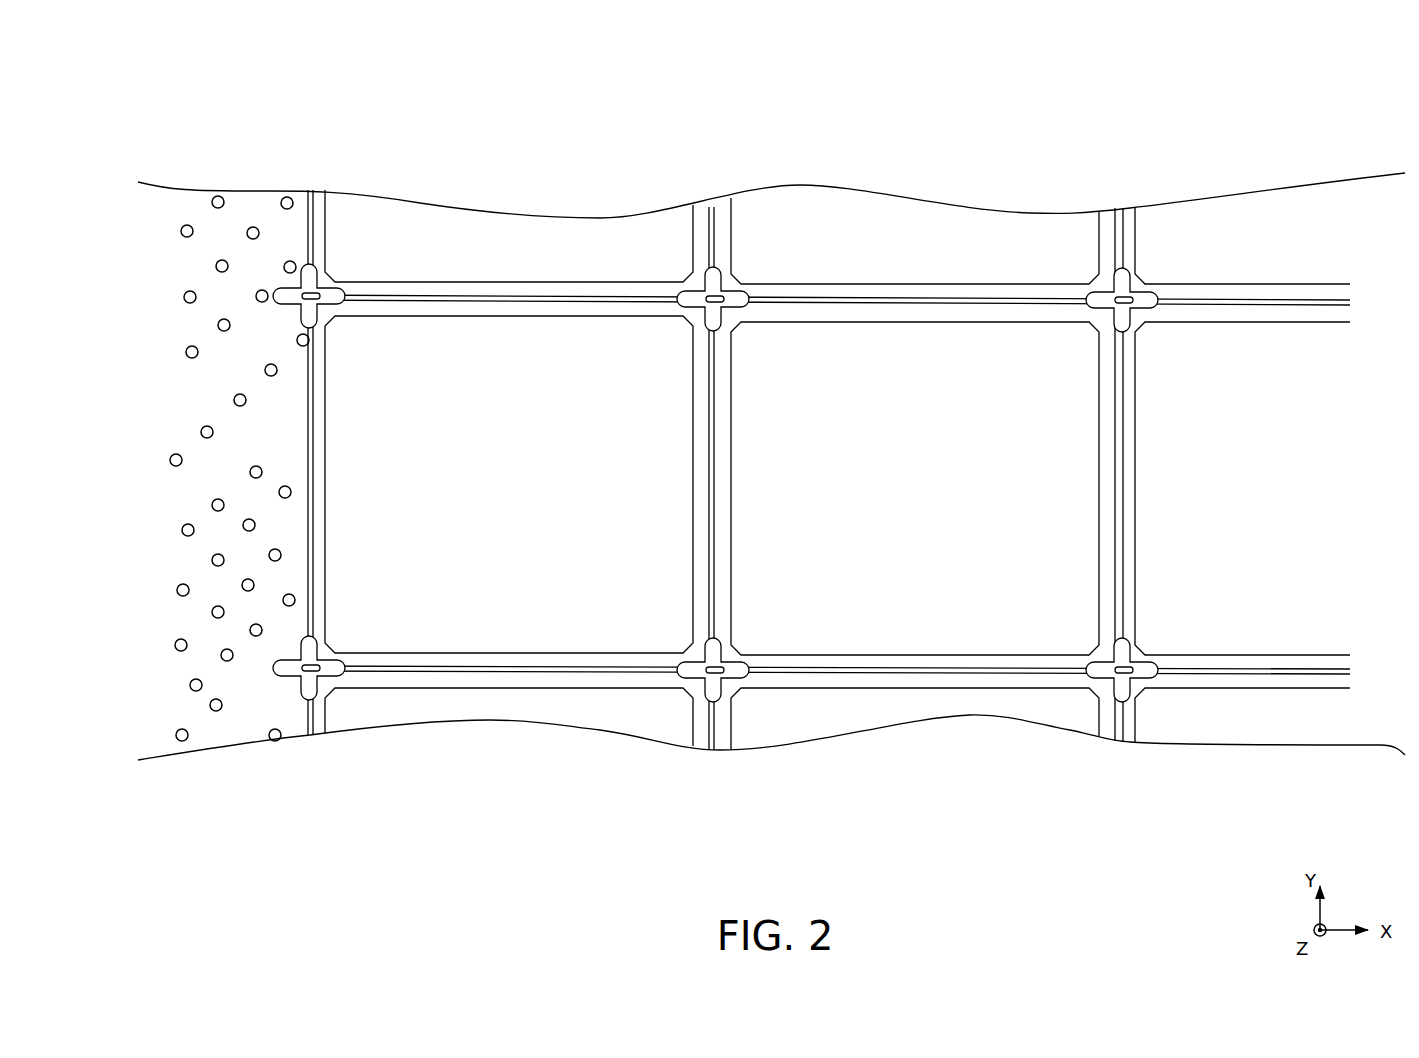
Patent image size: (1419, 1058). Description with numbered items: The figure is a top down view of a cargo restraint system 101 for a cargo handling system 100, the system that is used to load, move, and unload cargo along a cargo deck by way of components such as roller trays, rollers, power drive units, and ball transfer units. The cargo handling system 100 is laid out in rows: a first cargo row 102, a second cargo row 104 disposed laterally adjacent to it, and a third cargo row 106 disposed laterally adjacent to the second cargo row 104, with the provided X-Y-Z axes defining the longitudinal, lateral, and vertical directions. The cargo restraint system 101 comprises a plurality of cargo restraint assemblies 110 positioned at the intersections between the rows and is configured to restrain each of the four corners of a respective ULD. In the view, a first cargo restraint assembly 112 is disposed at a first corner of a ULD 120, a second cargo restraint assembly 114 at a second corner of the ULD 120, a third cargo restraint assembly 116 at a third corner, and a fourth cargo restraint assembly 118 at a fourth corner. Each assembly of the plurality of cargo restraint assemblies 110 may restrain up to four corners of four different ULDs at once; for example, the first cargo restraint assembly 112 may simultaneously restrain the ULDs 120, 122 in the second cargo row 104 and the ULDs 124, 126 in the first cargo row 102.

The cargo handling system 100 is at (265, 110).
The cargo restraint system 101 is at (766, 395).
The first cargo row 102 is at (280, 230).
The second cargo row 104 is at (300, 425).
The third cargo row 106 is at (297, 716).
The plurality of cargo restraint assemblies 110 is at (1130, 298).
The first cargo restraint assembly 112 is at (717, 294).
The second cargo restraint assembly 114 is at (315, 292).
The third cargo restraint assembly 116 is at (290, 672).
The fourth cargo restraint assembly 118 is at (690, 672).
The ULD 120 is at (509, 484).
The ULD 122 is at (915, 488).
The ULD 124 is at (509, 236).
The ULD 126 is at (915, 241).